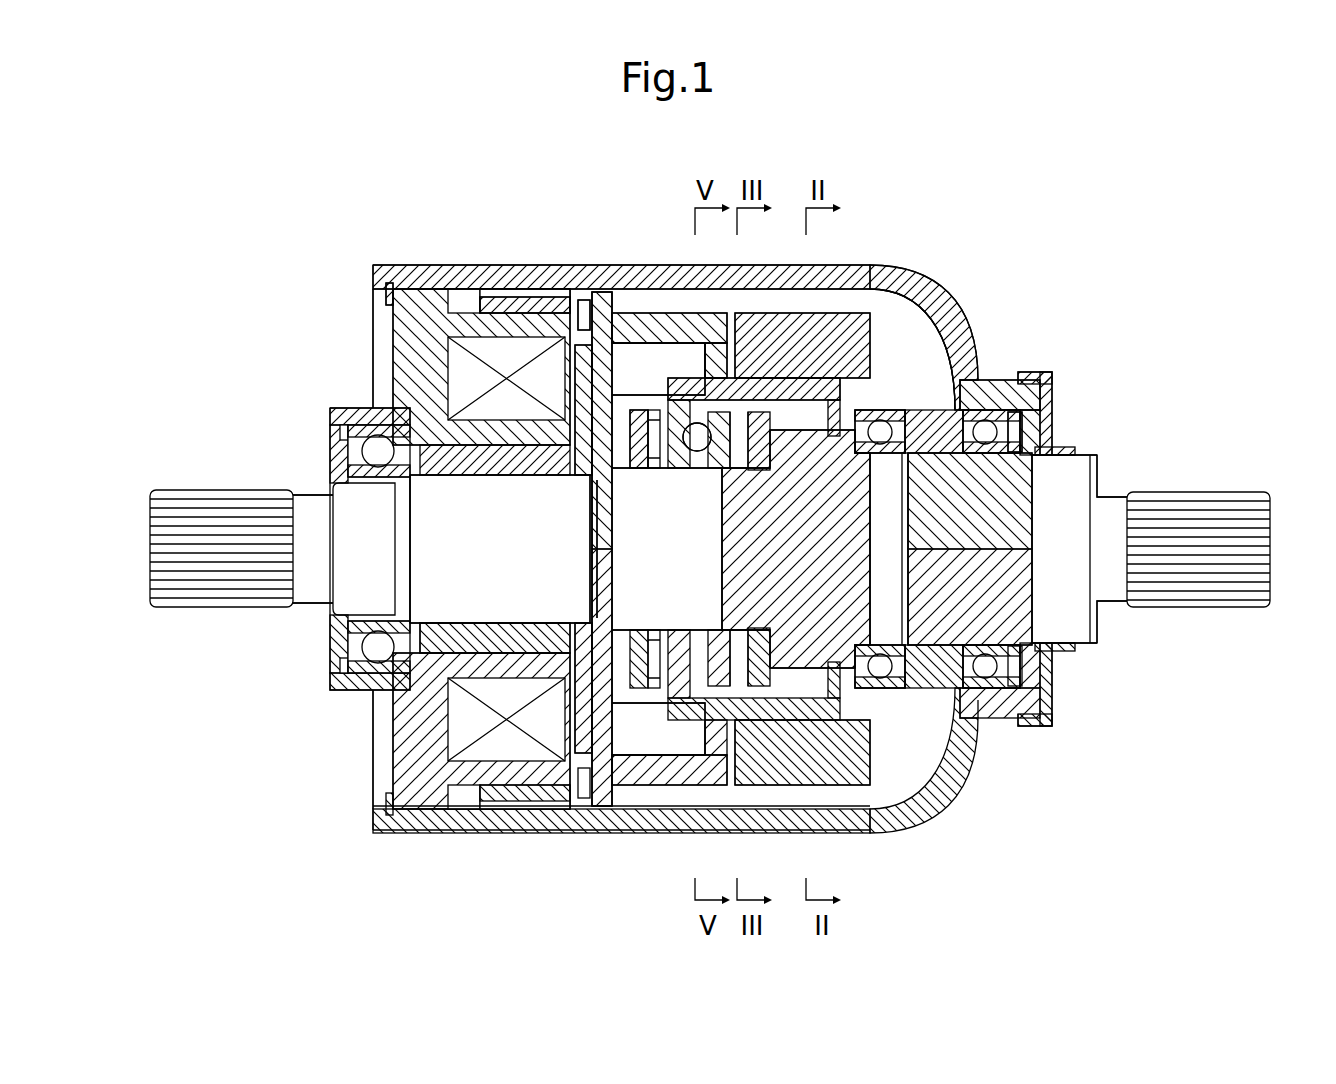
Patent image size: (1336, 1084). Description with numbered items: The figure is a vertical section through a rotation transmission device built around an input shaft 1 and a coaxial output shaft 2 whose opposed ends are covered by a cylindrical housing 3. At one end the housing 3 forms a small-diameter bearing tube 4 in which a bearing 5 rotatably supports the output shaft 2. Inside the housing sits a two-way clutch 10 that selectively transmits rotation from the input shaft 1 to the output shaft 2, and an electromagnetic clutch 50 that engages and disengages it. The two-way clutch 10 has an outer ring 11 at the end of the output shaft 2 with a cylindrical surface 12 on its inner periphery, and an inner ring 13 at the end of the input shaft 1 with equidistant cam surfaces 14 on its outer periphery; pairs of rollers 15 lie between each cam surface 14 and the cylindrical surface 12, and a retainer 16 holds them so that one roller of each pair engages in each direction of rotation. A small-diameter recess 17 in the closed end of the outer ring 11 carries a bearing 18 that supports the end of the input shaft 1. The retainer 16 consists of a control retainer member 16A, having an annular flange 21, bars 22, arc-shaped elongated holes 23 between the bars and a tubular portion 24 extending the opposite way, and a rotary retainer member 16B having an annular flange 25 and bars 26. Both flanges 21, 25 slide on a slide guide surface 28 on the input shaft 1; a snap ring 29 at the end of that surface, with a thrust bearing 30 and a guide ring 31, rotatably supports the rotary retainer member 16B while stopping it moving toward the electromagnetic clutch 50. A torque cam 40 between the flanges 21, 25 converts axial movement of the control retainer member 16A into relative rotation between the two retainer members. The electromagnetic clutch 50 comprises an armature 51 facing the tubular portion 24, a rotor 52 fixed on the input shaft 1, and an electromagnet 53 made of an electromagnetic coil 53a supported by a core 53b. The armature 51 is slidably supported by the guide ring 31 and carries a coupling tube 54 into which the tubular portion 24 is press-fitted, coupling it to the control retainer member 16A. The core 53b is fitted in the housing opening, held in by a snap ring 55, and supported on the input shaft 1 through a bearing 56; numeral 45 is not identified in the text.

The input shaft 1 is at (313, 500).
The output shaft 2 is at (1110, 500).
The housing 3 is at (405, 264).
The bearing tube 4 is at (1040, 372).
The bearing 5 is at (1025, 422).
The two-way clutch 10 is at (918, 300).
The outer ring 11 is at (910, 322).
The cylindrical surface 12 is at (812, 732).
The inner ring 13 is at (990, 386).
The cam surfaces 14 is at (876, 690).
The rollers 15 is at (858, 350).
The retainer 16 is at (698, 308).
The control retainer member 16A is at (720, 378).
The rotary retainer member 16B is at (683, 390).
The recess 17 is at (975, 742).
The bearing 18 is at (988, 732).
The annular flange 21 is at (710, 676).
The bars 22 is at (780, 722).
The elongated holes 23 is at (742, 377).
The tubular portion 24 is at (640, 792).
The annular flange 25 is at (683, 414).
The bars 26 is at (884, 306).
The slide guide surface 28 is at (702, 466).
The snap ring 29 is at (583, 480).
The thrust bearing 30 is at (645, 466).
The guide ring 31 is at (598, 507).
The torque cam 40 is at (718, 478).
The lower holder 45 is at (690, 772).
The electromagnetic clutch 50 is at (462, 305).
The armature 51 is at (600, 330).
The rotor 52 is at (580, 300).
The electromagnet 53 is at (522, 304).
The electromagnetic coil 53a is at (510, 740).
The core 53b is at (476, 766).
The coupling tube 54 is at (655, 802).
The snap ring 55 is at (373, 292).
The bearing 56 is at (357, 630).